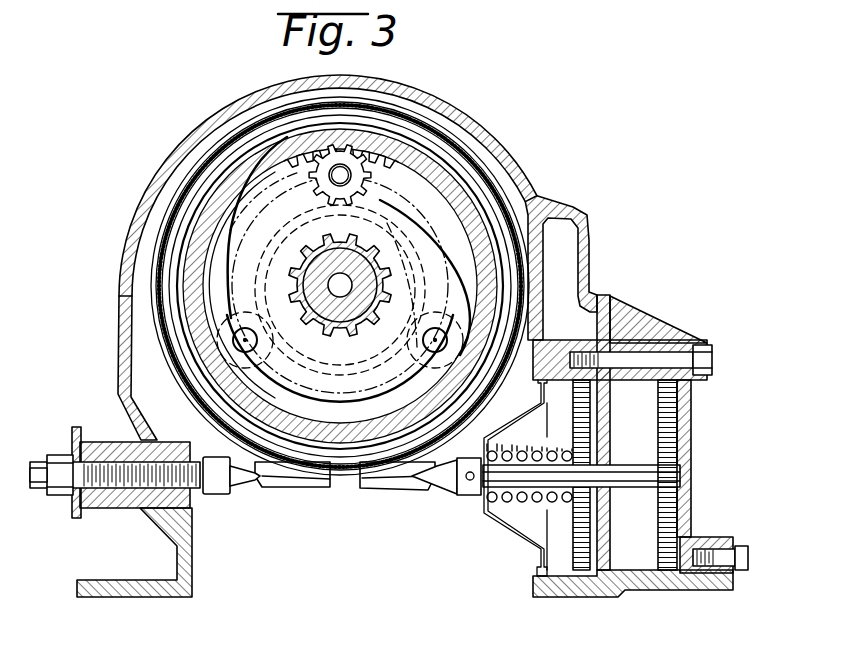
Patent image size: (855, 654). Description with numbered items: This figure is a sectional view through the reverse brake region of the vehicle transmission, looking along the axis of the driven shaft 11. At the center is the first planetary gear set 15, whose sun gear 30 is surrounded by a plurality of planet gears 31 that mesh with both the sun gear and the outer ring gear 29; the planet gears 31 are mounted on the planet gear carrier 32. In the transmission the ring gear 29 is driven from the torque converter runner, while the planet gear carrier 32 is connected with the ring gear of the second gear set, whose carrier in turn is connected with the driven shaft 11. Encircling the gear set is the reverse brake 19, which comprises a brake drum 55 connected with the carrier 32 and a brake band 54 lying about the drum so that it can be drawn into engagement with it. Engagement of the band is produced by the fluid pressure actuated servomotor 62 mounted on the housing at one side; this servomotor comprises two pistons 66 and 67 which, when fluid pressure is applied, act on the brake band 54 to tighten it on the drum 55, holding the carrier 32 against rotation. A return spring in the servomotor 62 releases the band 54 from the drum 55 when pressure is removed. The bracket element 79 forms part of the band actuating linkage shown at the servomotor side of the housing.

The driven shaft 11 is at (340, 285).
The planetary gear set 15 is at (437, 205).
The reverse brake 19 is at (163, 372).
The ring gear 29 is at (283, 148).
The sun gear 30 is at (308, 207).
The planet gears 31 is at (352, 148).
The planet gear carrier 32 is at (247, 240).
The brake band 54 is at (158, 293).
The brake drum 55 is at (172, 327).
The servomotor 62 is at (693, 405).
The piston 66 is at (668, 503).
The piston 67 is at (582, 577).
The spring lever cup 79 is at (510, 500).